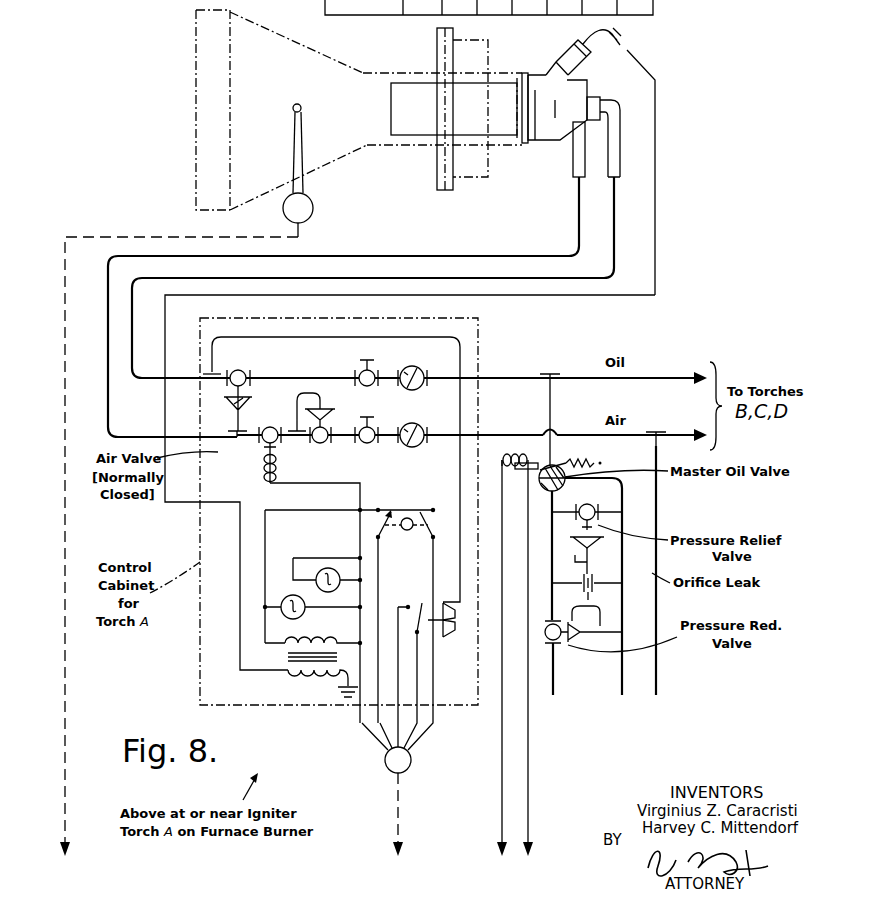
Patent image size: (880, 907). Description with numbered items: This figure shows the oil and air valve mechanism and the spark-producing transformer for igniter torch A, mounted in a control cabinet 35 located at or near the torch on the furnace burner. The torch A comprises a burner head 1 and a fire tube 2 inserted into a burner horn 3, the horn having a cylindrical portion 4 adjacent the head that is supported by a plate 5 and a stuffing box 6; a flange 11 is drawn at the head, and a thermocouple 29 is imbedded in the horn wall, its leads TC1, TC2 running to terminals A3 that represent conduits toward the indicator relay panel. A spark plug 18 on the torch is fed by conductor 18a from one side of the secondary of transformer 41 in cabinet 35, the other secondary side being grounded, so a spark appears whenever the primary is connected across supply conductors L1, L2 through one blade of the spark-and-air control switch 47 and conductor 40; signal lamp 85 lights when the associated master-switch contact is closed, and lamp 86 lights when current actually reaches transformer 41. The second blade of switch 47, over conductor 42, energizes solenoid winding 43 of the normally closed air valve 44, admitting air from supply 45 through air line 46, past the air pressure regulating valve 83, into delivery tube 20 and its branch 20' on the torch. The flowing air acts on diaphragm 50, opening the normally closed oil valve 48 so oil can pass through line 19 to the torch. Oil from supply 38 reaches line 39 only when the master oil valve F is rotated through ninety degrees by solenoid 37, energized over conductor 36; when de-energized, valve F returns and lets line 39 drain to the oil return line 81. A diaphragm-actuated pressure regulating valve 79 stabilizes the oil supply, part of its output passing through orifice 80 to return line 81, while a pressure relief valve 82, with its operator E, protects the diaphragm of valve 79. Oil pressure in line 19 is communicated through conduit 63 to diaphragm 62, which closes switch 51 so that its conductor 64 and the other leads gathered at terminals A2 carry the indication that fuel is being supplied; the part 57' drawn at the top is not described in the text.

The burner head 1 is at (543, 142).
The fire tube 2 is at (413, 136).
The burner horn 3 is at (327, 165).
The cylindrical portion 4 is at (380, 148).
The plate 5 is at (438, 180).
The stuffing box 6 is at (471, 180).
The flange 11 is at (524, 145).
The spark plug 18 is at (573, 58).
The supply lead 18a is at (506, 297).
The oil supply line 19 is at (611, 105).
The air delivery tube 20 is at (346, 279).
The air hose branch 20' is at (182, 418).
The thermocouple 29 is at (305, 105).
The control cabinet 35 is at (200, 636).
The solenoid conductor 36 is at (533, 675).
The solenoid 37 is at (512, 470).
The oil supply line 38 is at (555, 692).
The oil line 39 is at (573, 375).
The conductor 40 is at (265, 576).
The transformer 41 is at (288, 655).
The conductor 42 is at (441, 720).
The solenoid winding 43 is at (263, 469).
The air valve 44 is at (262, 443).
The air supply pipe 45 is at (659, 678).
The air delivery pipe 46 is at (676, 433).
The spark-and-air control switch 47 is at (432, 518).
The oil valve 48 is at (243, 370).
The diaphragm 50 is at (246, 405).
The switch 51 is at (416, 605).
The sequence chart 57' is at (489, 8).
The diaphragm 62 is at (448, 636).
The conduit 63 is at (300, 338).
The conductor 64 is at (421, 740).
The pressure regulating valve 79 is at (562, 641).
The orifice 80 is at (597, 580).
The oil return line 81 is at (624, 626).
The pressure relief valve 82 is at (588, 507).
The pressure regulating valve 83 is at (323, 426).
The signal lamp 85 is at (345, 568).
The signal lamp 86 is at (292, 619).
The igniter torch A is at (196, 88).
The terminals A2 is at (411, 768).
The terminals A3 is at (283, 214).
The relief valve operator E is at (591, 557).
The master oil valve F is at (570, 464).
The supply conductor L1 is at (384, 697).
The supply conductor L2 is at (344, 732).
The thermocouple lead TC1 is at (303, 141).
The thermocouple lead TC2 is at (293, 147).